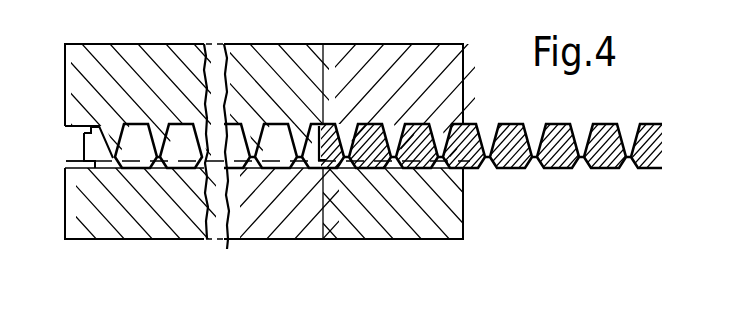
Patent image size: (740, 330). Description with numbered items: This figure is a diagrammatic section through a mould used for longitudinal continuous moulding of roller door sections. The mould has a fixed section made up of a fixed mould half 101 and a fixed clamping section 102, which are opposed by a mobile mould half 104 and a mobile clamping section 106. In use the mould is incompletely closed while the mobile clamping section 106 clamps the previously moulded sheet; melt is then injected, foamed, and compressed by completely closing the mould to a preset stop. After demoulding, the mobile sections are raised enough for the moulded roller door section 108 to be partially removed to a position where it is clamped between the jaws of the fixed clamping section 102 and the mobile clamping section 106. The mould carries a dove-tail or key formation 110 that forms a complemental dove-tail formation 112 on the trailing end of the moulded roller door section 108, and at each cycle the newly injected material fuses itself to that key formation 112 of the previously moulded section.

The fixed mould half 101 is at (191, 232).
The fixed clamping section 102 is at (421, 230).
The mobile mould half 104 is at (159, 50).
The mobile clamping section 106 is at (427, 48).
The moulded roller door section 108 is at (512, 122).
The dove-tail or key formation 110 is at (86, 142).
The complemental dove-tail formation 112 is at (311, 170).